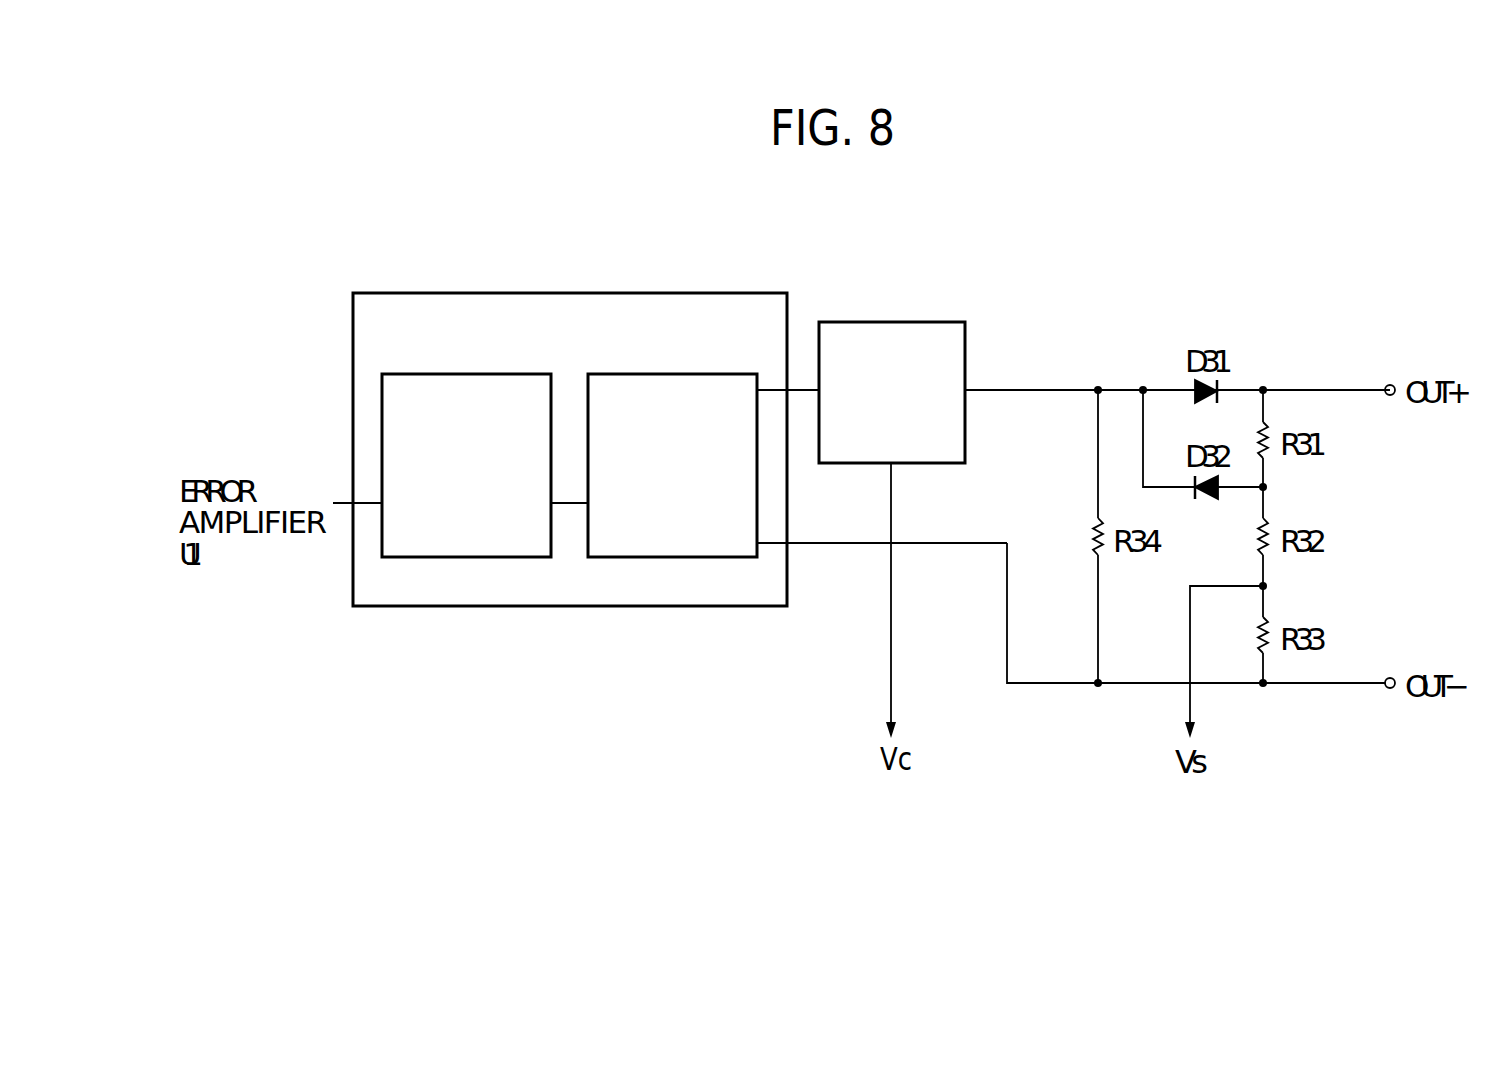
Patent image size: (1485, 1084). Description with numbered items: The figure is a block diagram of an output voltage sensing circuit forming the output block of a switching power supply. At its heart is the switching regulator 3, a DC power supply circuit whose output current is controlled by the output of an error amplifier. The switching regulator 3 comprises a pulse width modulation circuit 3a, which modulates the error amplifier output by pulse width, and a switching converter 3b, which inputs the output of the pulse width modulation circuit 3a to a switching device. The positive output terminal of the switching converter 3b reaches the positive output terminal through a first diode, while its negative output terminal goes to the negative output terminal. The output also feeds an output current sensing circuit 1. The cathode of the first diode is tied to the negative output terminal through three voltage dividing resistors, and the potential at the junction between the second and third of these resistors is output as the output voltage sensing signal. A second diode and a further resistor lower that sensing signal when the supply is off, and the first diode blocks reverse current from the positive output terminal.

The output current sensing circuit 1 is at (890, 322).
The switching regulator 3 is at (570, 293).
The pulse width modulation circuit 3a is at (458, 374).
The switching converter 3b is at (678, 374).